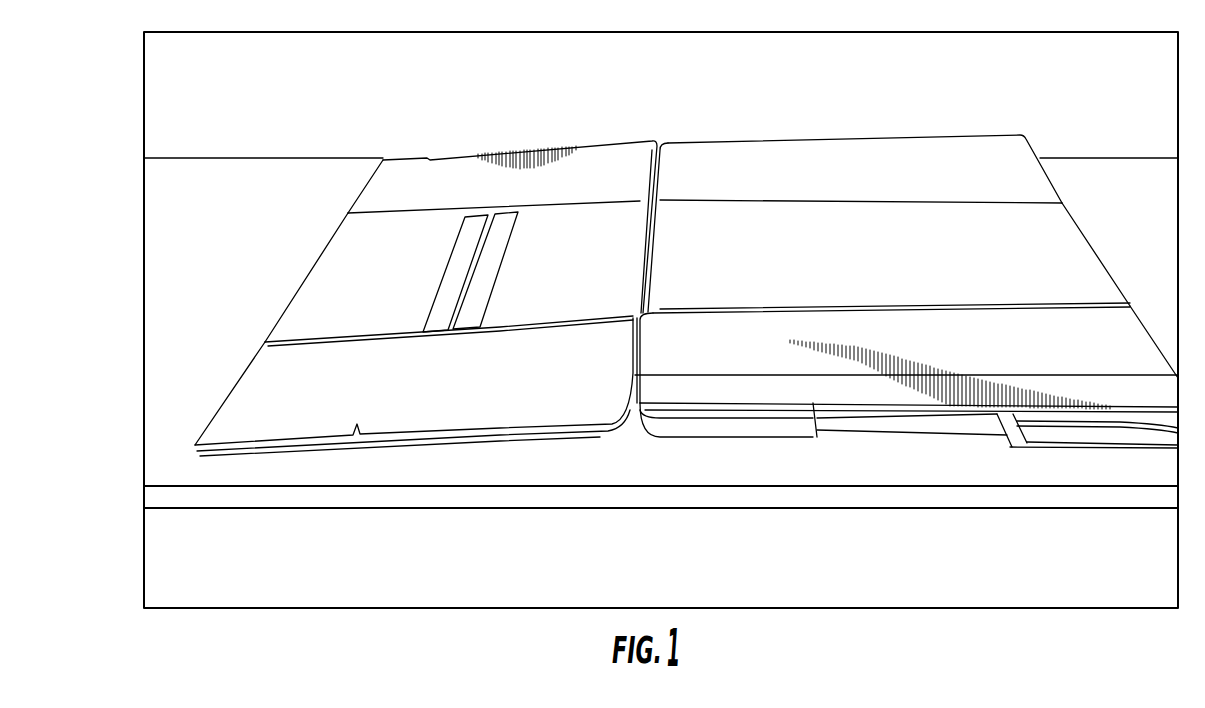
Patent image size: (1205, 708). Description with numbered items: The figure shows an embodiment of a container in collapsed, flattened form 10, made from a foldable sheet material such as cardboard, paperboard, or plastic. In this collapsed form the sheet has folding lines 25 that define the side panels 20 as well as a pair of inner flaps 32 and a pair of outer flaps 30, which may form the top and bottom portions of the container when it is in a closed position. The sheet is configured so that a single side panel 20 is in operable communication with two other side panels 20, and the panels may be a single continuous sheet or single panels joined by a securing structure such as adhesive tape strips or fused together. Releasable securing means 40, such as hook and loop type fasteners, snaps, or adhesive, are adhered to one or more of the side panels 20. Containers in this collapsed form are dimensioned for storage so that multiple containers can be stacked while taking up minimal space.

The container in collapsed flattened form 10 is at (401, 130).
The side panel 20 is at (336, 331).
The folding line 25 is at (598, 322).
The outer flap 30 is at (954, 186).
The inner flap 32 is at (452, 205).
The releasable securing means 40 is at (465, 233).